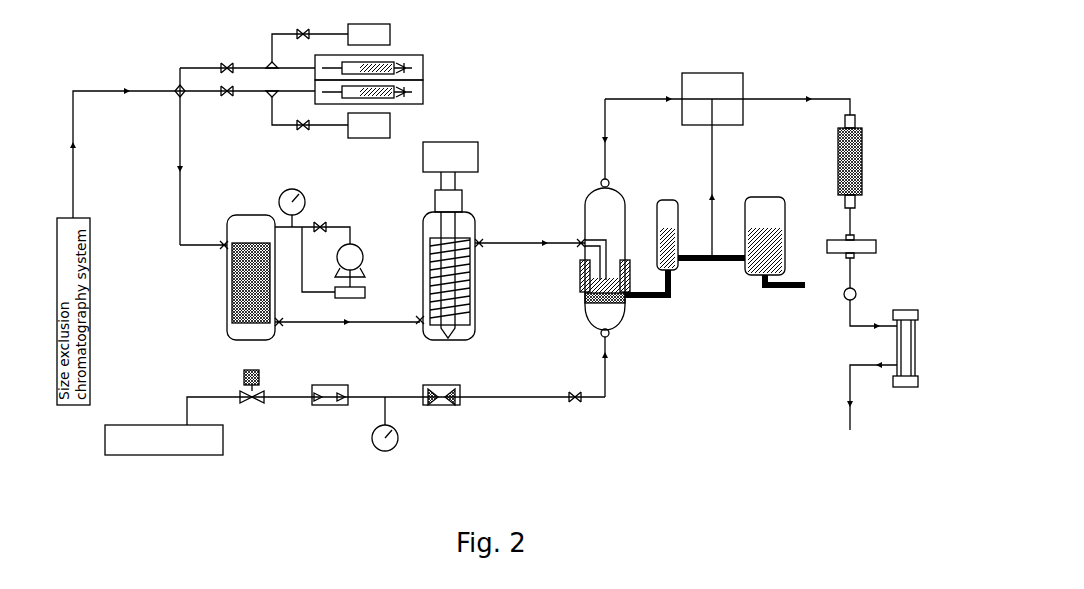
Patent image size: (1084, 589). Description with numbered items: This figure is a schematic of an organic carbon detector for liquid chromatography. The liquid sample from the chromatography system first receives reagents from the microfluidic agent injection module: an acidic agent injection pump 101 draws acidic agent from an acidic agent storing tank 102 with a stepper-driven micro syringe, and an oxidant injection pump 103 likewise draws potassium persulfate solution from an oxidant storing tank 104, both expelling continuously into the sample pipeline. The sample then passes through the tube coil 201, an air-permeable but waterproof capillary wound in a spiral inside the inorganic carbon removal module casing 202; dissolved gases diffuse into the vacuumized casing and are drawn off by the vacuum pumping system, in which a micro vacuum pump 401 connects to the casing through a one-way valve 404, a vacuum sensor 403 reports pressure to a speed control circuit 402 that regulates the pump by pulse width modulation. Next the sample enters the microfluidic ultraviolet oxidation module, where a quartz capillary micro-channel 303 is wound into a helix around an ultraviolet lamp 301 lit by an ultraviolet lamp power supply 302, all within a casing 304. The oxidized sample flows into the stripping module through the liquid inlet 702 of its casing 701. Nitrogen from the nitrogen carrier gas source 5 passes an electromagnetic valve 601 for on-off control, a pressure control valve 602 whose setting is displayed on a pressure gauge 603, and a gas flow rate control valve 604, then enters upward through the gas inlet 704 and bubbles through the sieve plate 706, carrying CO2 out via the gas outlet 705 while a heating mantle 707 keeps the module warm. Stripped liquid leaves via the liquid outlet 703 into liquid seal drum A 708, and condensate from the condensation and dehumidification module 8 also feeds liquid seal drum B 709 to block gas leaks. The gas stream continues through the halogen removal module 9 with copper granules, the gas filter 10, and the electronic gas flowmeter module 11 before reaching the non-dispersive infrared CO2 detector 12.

The nitrogen carrier gas source 5 is at (224, 440).
The condensation and dehumidification module 8 is at (712, 73).
The halogen removal module 9 is at (862, 130).
The gas filter 10 is at (862, 240).
The electronic gas flowmeter module 11 is at (856, 292).
The CO2 detector 12 is at (906, 310).
The acidic agent injection pump 101 is at (425, 75).
The acidic agent storing tank 102 is at (400, 38).
The oxidant injection pump 103 is at (425, 99).
The oxidant storing tank 104 is at (403, 127).
The tube coil 201 is at (232, 285).
The inorganic carbon removal module casing 202 is at (243, 215).
The ultraviolet lamp 301 is at (462, 198).
The ultraviolet lamp power supply 302 is at (462, 160).
The micro-channel 303 is at (470, 300).
The microfluidic ultraviolet oxidization module casing 304 is at (425, 325).
The micro vacuum pump 401 is at (355, 244).
The speed control circuit 402 is at (365, 290).
The vacuum sensor 403 is at (300, 192).
The one-way valve 404 is at (322, 220).
The electromagnetic valve 601 is at (255, 390).
The pressure control valve 602 is at (332, 385).
The pressure gauge 603 is at (398, 440).
The gas flow rate control valve 604 is at (440, 385).
The casing 701 is at (588, 208).
The liquid inlet 702 is at (575, 240).
The liquid outlet 703 is at (625, 300).
The gas inlet 704 is at (609, 335).
The gas outlet 705 is at (605, 183).
The sieve plate 706 is at (590, 312).
The heating mantle 707 is at (582, 276).
The liquid seal drum A 708 is at (665, 200).
The liquid seal drum B 709 is at (768, 197).